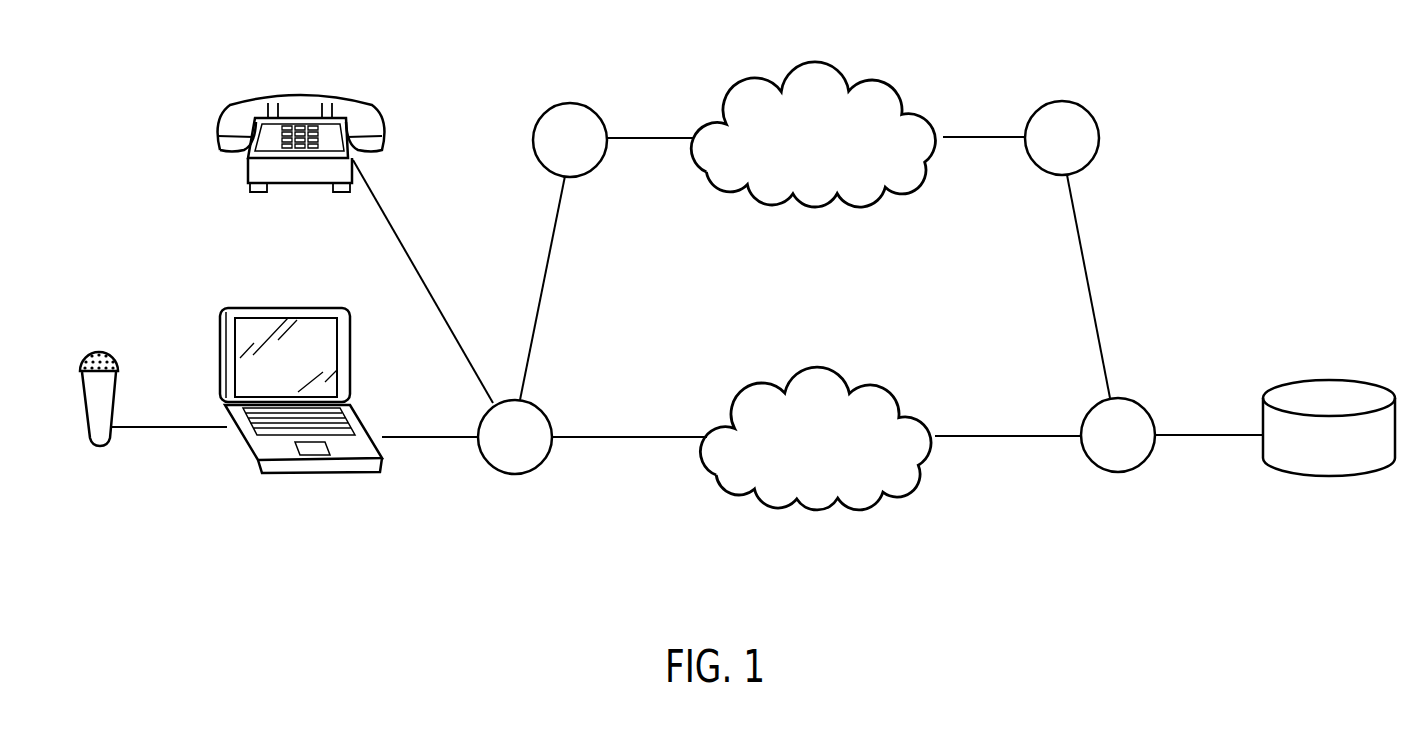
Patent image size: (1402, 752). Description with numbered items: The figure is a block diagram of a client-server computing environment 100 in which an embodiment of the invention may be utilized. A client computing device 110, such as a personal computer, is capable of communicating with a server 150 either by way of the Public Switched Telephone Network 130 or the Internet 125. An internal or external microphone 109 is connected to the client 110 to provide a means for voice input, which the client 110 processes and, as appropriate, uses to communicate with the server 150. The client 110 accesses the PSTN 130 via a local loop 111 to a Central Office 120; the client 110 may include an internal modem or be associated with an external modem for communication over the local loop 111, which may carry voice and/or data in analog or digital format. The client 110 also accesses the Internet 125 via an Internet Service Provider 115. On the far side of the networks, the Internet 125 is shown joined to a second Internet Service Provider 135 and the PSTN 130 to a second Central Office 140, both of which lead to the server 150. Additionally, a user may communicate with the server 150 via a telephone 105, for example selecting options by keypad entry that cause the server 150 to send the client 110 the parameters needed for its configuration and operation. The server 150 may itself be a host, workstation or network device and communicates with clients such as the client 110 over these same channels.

The client-server computing environment 100 is at (975, 588).
The telephone 105 is at (258, 97).
The microphone 109 is at (90, 346).
The client computing device 110 is at (263, 307).
The local loop 111 is at (163, 425).
The Internet Service Provider 115 is at (574, 103).
The Central Office 120 is at (547, 410).
The Internet 125 is at (888, 80).
The Public Switched Telephone Network 130 is at (877, 375).
The internet service provider 135 is at (1100, 140).
The central office 140 is at (1127, 397).
The server 150 is at (1338, 378).